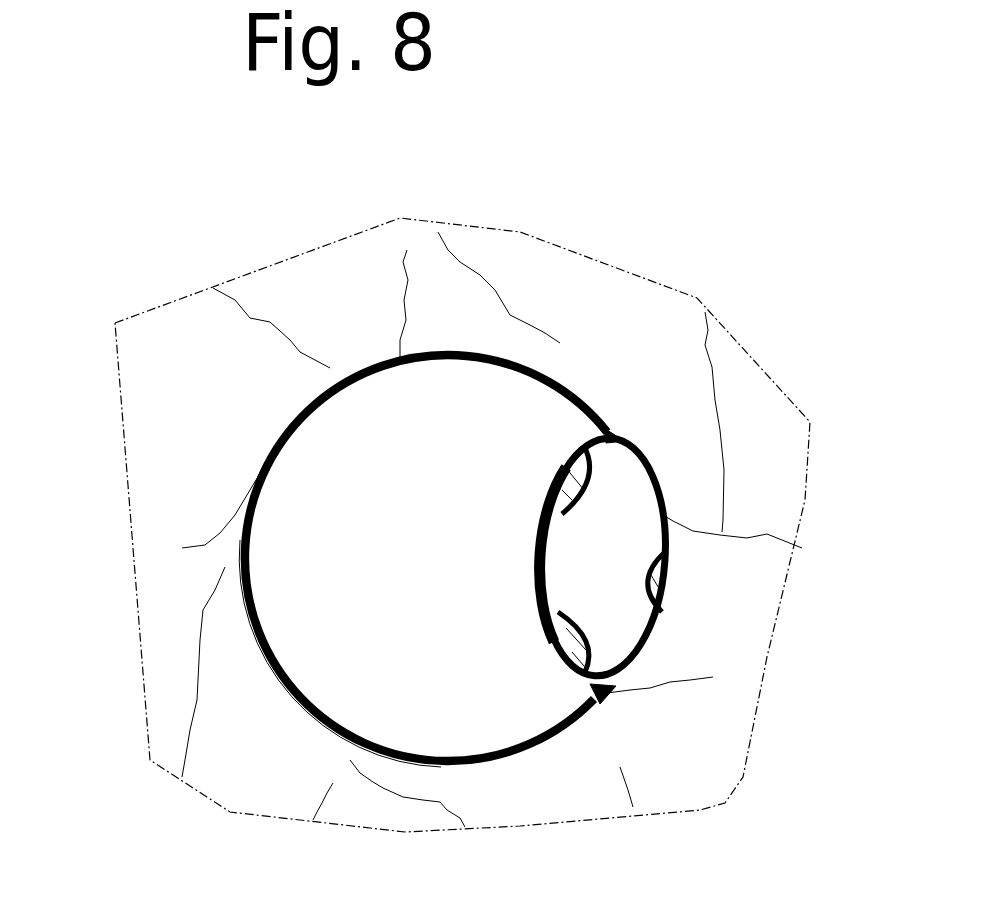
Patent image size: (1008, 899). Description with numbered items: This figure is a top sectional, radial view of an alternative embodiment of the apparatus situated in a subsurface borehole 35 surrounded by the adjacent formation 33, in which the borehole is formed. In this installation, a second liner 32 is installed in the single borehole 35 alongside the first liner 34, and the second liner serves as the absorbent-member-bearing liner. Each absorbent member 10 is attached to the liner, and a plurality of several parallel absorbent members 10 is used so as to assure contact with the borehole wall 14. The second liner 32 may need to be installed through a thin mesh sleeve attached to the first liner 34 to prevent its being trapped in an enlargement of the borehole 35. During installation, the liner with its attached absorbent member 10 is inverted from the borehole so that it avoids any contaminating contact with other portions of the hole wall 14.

The absorbent member 10 is at (578, 470).
The borehole wall 14 is at (618, 430).
The second liner 32 is at (610, 552).
The bone 33 is at (238, 413).
The first liner 34 is at (327, 520).
The borehole 35 is at (608, 694).